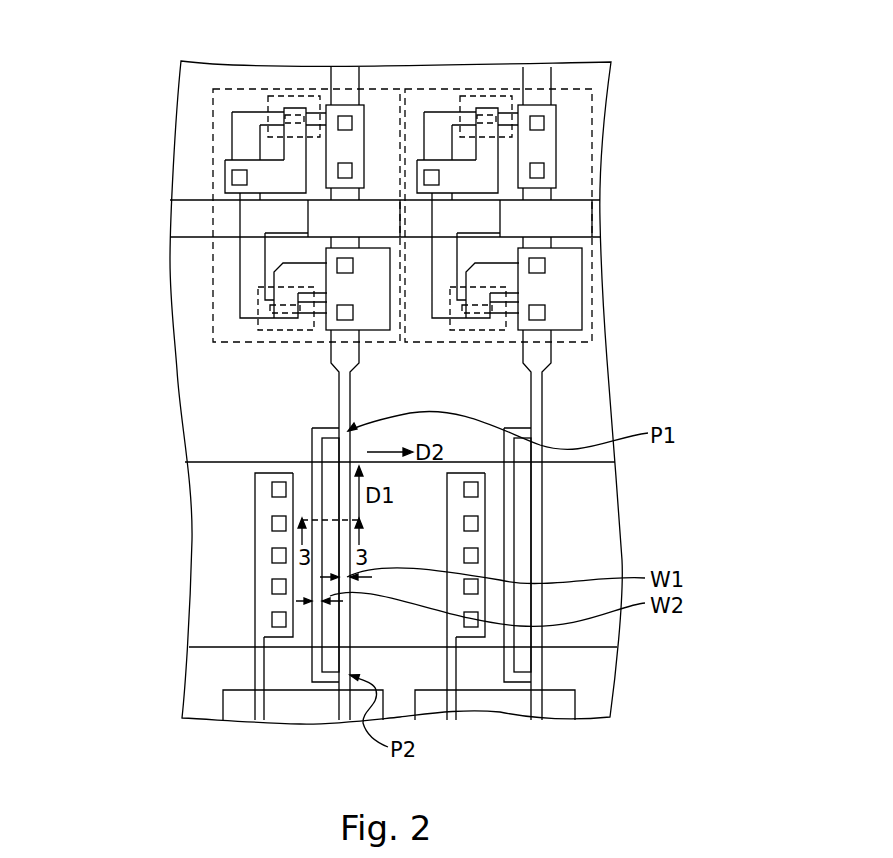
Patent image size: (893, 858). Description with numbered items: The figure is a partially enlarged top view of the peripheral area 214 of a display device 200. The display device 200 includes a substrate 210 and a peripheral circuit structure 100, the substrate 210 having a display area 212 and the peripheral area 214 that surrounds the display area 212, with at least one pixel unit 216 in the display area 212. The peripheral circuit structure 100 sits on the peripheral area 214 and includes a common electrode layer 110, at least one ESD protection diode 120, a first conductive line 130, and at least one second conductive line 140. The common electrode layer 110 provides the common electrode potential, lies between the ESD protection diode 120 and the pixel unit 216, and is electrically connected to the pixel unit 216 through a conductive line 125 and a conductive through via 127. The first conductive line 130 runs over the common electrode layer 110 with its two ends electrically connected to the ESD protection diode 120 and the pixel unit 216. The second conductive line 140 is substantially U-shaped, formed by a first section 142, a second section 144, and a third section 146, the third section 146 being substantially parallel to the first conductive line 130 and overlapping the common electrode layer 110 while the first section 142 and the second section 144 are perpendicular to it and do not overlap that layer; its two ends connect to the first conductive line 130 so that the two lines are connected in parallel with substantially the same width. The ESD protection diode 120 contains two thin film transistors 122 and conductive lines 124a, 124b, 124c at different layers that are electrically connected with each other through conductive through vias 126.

The peripheral circuit structure 100 is at (735, 240).
The common electrode layer 110 is at (200, 493).
The ESD protection diode 120 is at (232, 340).
The thin film transistor 122 is at (268, 105).
The conductive line 124a is at (238, 147).
The conductive line 124b is at (277, 185).
The conductive line 124c is at (323, 252).
The conductive line 125 is at (260, 668).
The conductive through via 126 is at (237, 177).
The conductive through via 127 is at (277, 523).
The first conductive line 130 is at (345, 610).
The second conductive line 140 is at (78, 432).
The first section 142 is at (330, 441).
The second section 144 is at (333, 675).
The third section 146 is at (317, 590).
The display device 200 is at (110, 37).
The substrate 210 is at (190, 120).
The display area 212 is at (597, 672).
The peripheral area 214 is at (582, 389).
The pixel unit 216 is at (300, 715).